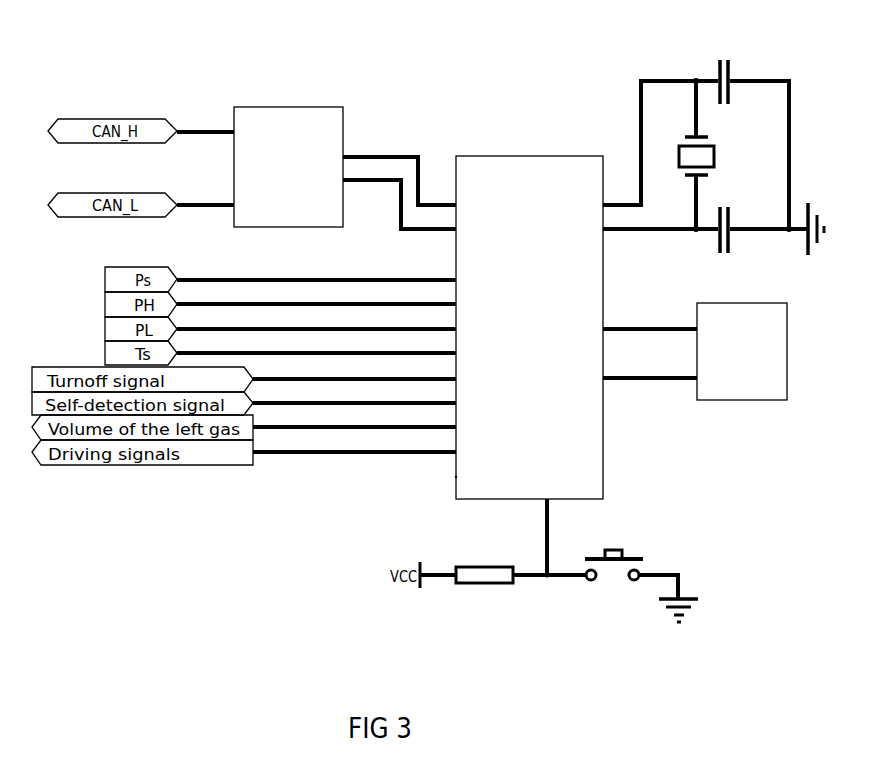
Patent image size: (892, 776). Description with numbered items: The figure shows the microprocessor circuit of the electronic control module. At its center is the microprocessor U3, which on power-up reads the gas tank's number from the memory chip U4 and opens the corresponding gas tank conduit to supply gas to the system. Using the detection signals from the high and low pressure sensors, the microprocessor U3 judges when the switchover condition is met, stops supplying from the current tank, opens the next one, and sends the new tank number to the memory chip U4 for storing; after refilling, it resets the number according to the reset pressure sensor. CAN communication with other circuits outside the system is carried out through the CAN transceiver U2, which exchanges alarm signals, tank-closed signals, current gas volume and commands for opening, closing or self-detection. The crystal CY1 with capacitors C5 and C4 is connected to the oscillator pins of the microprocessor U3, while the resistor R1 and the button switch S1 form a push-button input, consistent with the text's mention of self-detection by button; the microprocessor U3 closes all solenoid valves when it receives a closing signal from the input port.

The CAN transceiver U2 is at (288, 157).
The microprocessor U3 is at (529, 314).
The memory chip U4 is at (742, 341).
The oscillator capacitor C5 is at (723, 71).
The crystal oscillator CY1 is at (709, 154).
The oscillator capacitor C4 is at (723, 220).
The pull-up resistor R1 is at (484, 564).
The push button switch S1 is at (614, 555).